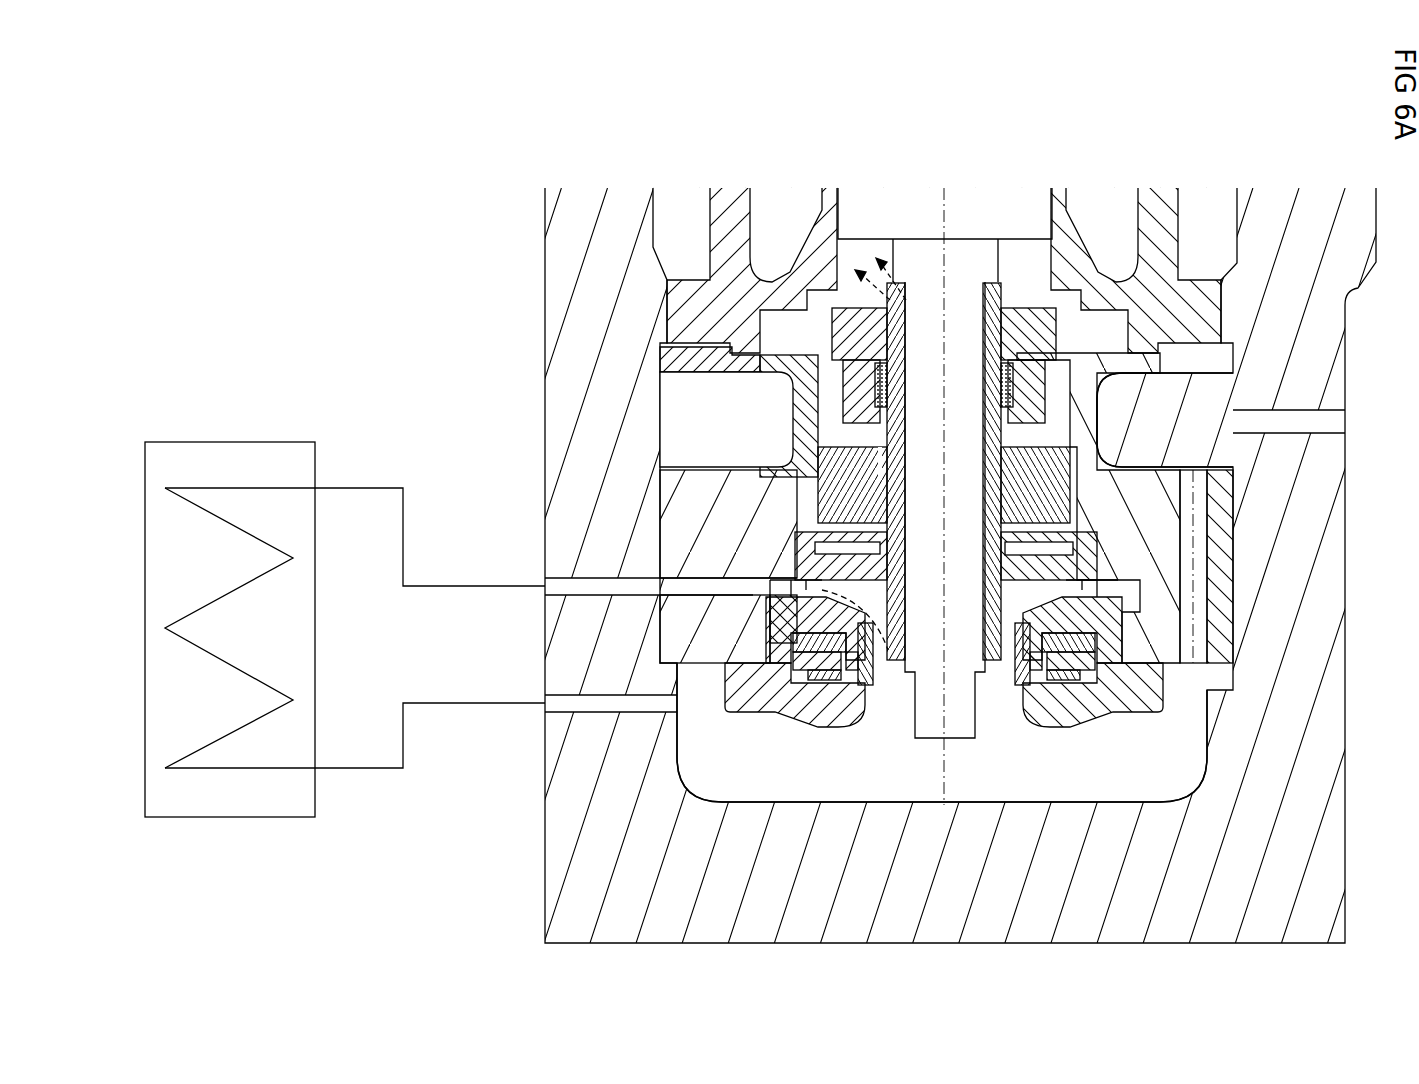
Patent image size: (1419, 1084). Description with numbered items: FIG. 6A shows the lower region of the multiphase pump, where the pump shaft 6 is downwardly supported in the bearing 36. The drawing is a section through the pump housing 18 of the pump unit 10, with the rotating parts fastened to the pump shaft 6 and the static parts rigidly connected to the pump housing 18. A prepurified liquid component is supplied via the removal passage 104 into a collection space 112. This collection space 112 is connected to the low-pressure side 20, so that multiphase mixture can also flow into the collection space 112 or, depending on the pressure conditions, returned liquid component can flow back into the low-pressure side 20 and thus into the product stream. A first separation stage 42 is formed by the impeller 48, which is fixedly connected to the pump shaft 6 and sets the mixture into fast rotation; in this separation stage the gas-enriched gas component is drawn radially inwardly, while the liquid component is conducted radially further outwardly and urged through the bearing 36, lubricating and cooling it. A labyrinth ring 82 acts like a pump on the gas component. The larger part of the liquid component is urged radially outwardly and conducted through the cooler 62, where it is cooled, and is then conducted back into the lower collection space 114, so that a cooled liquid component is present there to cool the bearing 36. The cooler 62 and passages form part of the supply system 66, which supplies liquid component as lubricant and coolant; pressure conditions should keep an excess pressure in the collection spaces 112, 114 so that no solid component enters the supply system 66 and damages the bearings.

The pump unit 10 is at (521, 239).
The pump shaft 6 is at (933, 647).
The pump housing 18 is at (572, 746).
The low-pressure side 20 is at (1033, 262).
The bearing 36 is at (866, 383).
The first separation stage 42 is at (806, 498).
The impeller 48 is at (830, 567).
The cooler 62 is at (275, 820).
The supply system 66 is at (377, 487).
The labyrinth ring 82 is at (873, 463).
The removal passage 104 is at (1222, 425).
The collection space 112 is at (1207, 425).
The lower collection space 114 is at (733, 757).